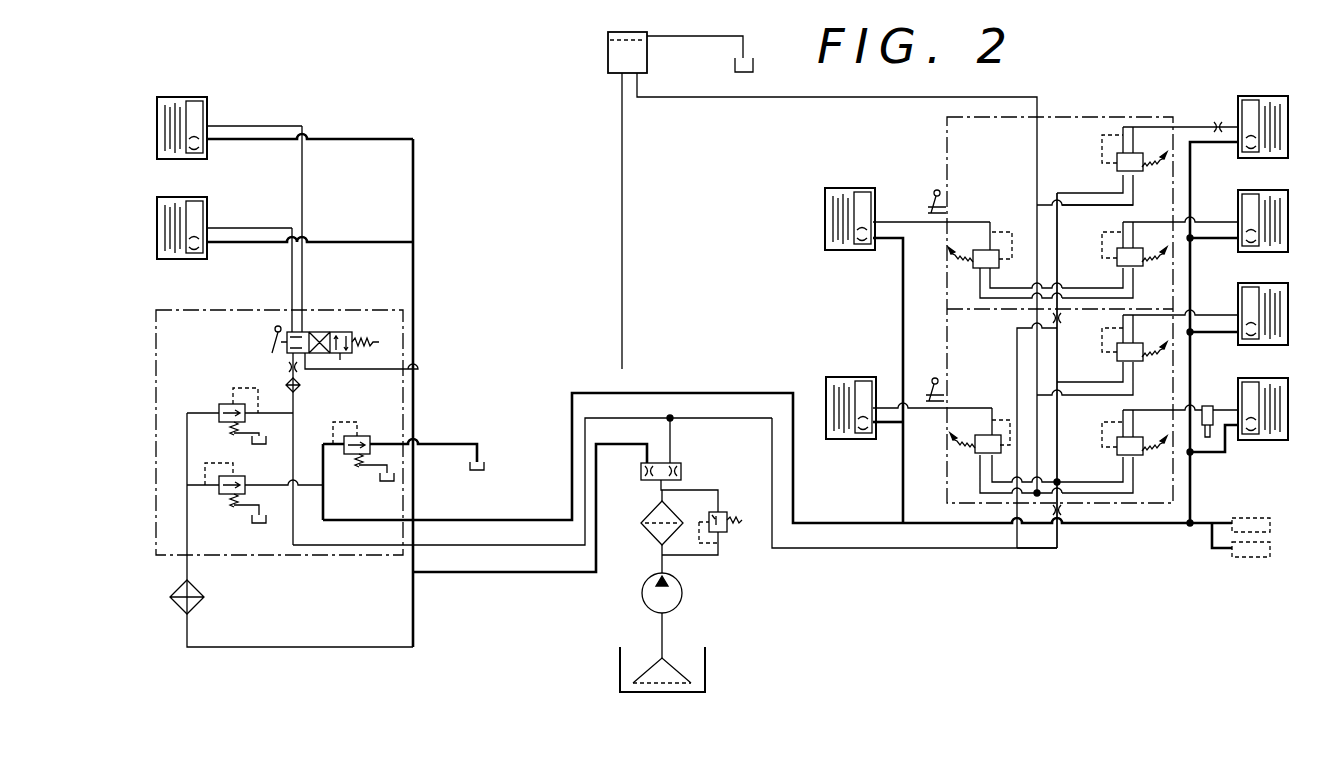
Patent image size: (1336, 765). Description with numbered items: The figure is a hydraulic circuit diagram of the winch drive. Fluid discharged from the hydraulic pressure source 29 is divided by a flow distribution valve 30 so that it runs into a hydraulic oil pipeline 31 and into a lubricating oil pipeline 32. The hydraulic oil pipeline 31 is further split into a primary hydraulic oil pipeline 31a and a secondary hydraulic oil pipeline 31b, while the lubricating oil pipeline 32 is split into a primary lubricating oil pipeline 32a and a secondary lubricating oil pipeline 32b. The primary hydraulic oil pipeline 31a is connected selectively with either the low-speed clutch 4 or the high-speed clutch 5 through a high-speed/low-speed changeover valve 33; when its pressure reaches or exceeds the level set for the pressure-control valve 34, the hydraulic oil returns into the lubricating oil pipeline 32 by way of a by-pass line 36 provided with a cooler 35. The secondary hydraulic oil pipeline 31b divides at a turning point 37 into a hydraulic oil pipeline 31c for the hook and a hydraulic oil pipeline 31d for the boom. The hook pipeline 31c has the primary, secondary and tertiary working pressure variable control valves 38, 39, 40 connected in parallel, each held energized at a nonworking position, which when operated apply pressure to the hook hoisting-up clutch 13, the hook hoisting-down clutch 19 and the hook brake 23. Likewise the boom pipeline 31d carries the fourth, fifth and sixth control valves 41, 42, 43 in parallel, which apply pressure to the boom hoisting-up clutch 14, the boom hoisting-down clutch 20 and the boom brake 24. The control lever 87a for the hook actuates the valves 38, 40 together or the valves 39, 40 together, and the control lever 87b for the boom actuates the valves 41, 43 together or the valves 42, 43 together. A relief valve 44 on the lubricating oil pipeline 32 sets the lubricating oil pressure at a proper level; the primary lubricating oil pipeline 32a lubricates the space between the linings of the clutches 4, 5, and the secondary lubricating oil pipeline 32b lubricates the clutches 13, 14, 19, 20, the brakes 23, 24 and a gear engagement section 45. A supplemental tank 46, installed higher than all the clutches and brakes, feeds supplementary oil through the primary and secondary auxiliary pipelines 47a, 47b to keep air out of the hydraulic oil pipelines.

The low-speed clutch 4 is at (205, 210).
The high-speed clutch 5 is at (206, 111).
The hook hoisting-up clutch 13 is at (825, 384).
The boom hoisting-up clutch 14 is at (823, 205).
The hook hoisting-down clutch 19 is at (1240, 379).
The boom hoisting-down clutch 20 is at (1237, 204).
The hook brake 23 is at (1238, 292).
The boom brake 24 is at (1237, 112).
The hydraulic pressure source 29 is at (683, 585).
The flow distribution valve 30 is at (681, 474).
The hydraulic oil pipeline 31 is at (672, 439).
The primary hydraulic oil pipeline 31a is at (518, 534).
The secondary hydraulic oil pipeline 31b is at (787, 548).
The hydraulic oil pipeline for the hook 31c is at (1059, 535).
The hydraulic oil pipeline for the boom 31d is at (1015, 365).
The lubricating oil pipeline 32 is at (548, 572).
The primary lubricating oil pipeline 32a is at (413, 486).
The secondary lubricating oil pipeline 32b is at (512, 520).
The high-speed/low-speed changeover valve 33 is at (358, 322).
The pressure-control valve 34 is at (225, 403).
The cooler 35 is at (203, 597).
The by-pass line 36 is at (360, 646).
The turning point 37 is at (1017, 548).
The primary control valve 38 is at (980, 455).
The secondary control valve 39 is at (1142, 438).
The tertiary control valve 40 is at (1140, 344).
The fourth control valve 41 is at (999, 268).
The fifth control valve 42 is at (1138, 250).
The sixth control valve 43 is at (1137, 154).
The relief valve 44 is at (369, 438).
The gear engagement section 45 is at (1248, 517).
The supplemental tank 46 is at (608, 70).
The primary auxiliary pipeline 47a is at (622, 228).
The secondary auxiliary pipeline 47b is at (1038, 107).
The control lever for the hook 87a is at (932, 378).
The control lever for the boom 87b is at (934, 191).